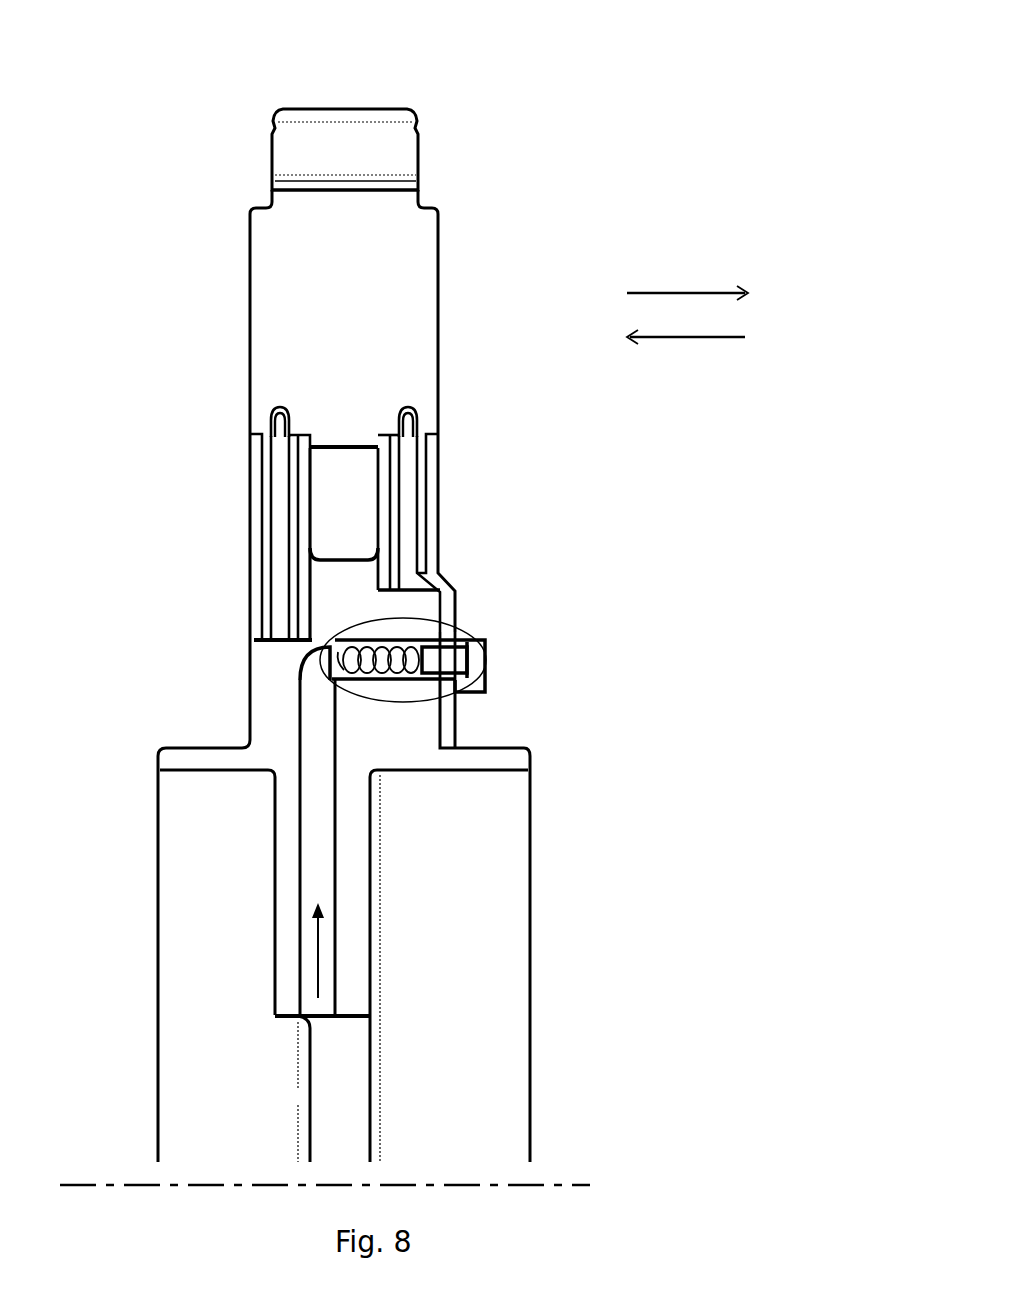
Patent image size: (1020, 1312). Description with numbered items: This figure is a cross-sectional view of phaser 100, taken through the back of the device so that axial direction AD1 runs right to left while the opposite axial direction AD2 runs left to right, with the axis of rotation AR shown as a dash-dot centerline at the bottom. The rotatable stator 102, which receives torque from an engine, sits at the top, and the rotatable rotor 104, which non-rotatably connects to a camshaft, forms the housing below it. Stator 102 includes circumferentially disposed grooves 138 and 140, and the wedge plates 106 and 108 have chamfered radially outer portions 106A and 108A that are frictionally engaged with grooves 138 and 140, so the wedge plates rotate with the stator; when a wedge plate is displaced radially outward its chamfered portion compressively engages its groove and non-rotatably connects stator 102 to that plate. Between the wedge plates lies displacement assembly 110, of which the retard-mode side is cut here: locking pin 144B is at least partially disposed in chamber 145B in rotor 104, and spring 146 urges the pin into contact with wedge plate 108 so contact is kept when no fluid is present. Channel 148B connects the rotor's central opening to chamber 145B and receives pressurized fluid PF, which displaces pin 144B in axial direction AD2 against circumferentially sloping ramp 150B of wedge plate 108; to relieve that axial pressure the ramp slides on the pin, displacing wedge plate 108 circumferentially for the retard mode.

The phaser 100 is at (632, 70).
The rotatable stator 102 is at (340, 108).
The rotatable rotor 104 is at (245, 705).
The wedge plate 106 is at (265, 597).
The chamfered radially outer portion 106A is at (280, 430).
The wedge plate 108 is at (420, 543).
The chamfered radially outer portion 108A is at (407, 430).
The displacement assembly 110 is at (430, 614).
The circumferentially disposed groove 138 is at (279, 406).
The circumferentially disposed groove 140 is at (409, 406).
The locking pin 144B is at (460, 700).
The chamber 145B is at (421, 690).
The spring 146 is at (358, 692).
The channel 148B is at (316, 846).
The circumferentially sloping ramp 150B is at (490, 640).
The pressurized fluid PF is at (317, 963).
The axis of rotation AR is at (585, 1183).
The axial direction AD1 is at (698, 338).
The axial direction AD2 is at (678, 292).